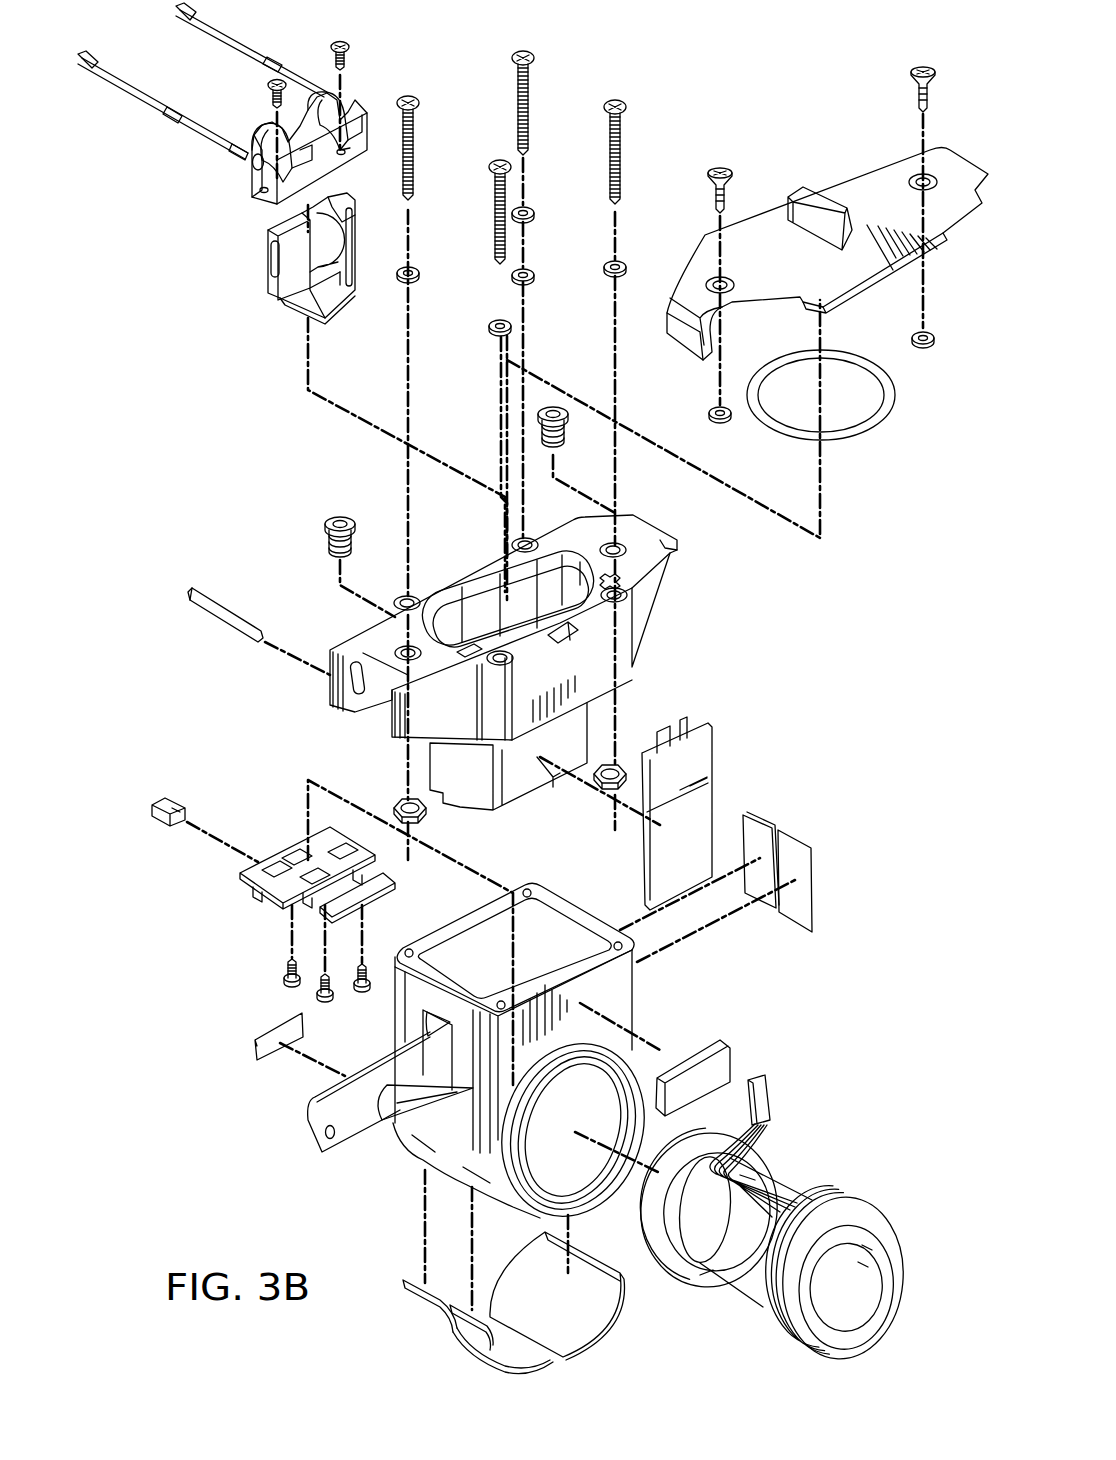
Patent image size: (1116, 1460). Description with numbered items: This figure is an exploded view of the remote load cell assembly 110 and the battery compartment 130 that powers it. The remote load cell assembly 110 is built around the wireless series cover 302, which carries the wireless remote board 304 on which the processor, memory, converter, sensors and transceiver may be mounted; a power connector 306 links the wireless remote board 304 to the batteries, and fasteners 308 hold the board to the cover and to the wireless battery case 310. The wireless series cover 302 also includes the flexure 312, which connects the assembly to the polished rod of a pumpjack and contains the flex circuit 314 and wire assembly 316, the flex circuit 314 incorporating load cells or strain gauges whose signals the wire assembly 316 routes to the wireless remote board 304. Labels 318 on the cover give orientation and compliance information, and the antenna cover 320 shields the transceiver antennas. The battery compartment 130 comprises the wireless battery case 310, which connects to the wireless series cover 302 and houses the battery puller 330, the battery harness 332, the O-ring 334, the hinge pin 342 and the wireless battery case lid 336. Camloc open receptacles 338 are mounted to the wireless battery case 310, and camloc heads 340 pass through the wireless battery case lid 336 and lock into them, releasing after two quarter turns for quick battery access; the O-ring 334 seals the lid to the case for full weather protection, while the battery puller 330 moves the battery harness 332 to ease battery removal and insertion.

The remote load cell assembly 110 is at (373, 1162).
The battery compartment 130 is at (658, 654).
The wireless series cover 302 is at (636, 1004).
The wireless remote board 304 is at (252, 880).
The power connector 306 is at (155, 820).
The fasteners 308 is at (350, 52).
The wireless battery case 310 is at (650, 616).
The flexure 312 is at (900, 1288).
The flex circuit 314 is at (745, 1272).
The wire assembly 316 is at (770, 1090).
The labels 318 is at (815, 870).
The antenna cover 320 is at (712, 797).
The battery puller 330 is at (268, 258).
The battery harness 332 is at (252, 182).
The O-ring 334 is at (858, 432).
The wireless battery case lid 336 is at (868, 163).
The camloc open receptacles 338 is at (556, 404).
The camloc heads 340 is at (722, 168).
The hinge pin 342 is at (220, 624).